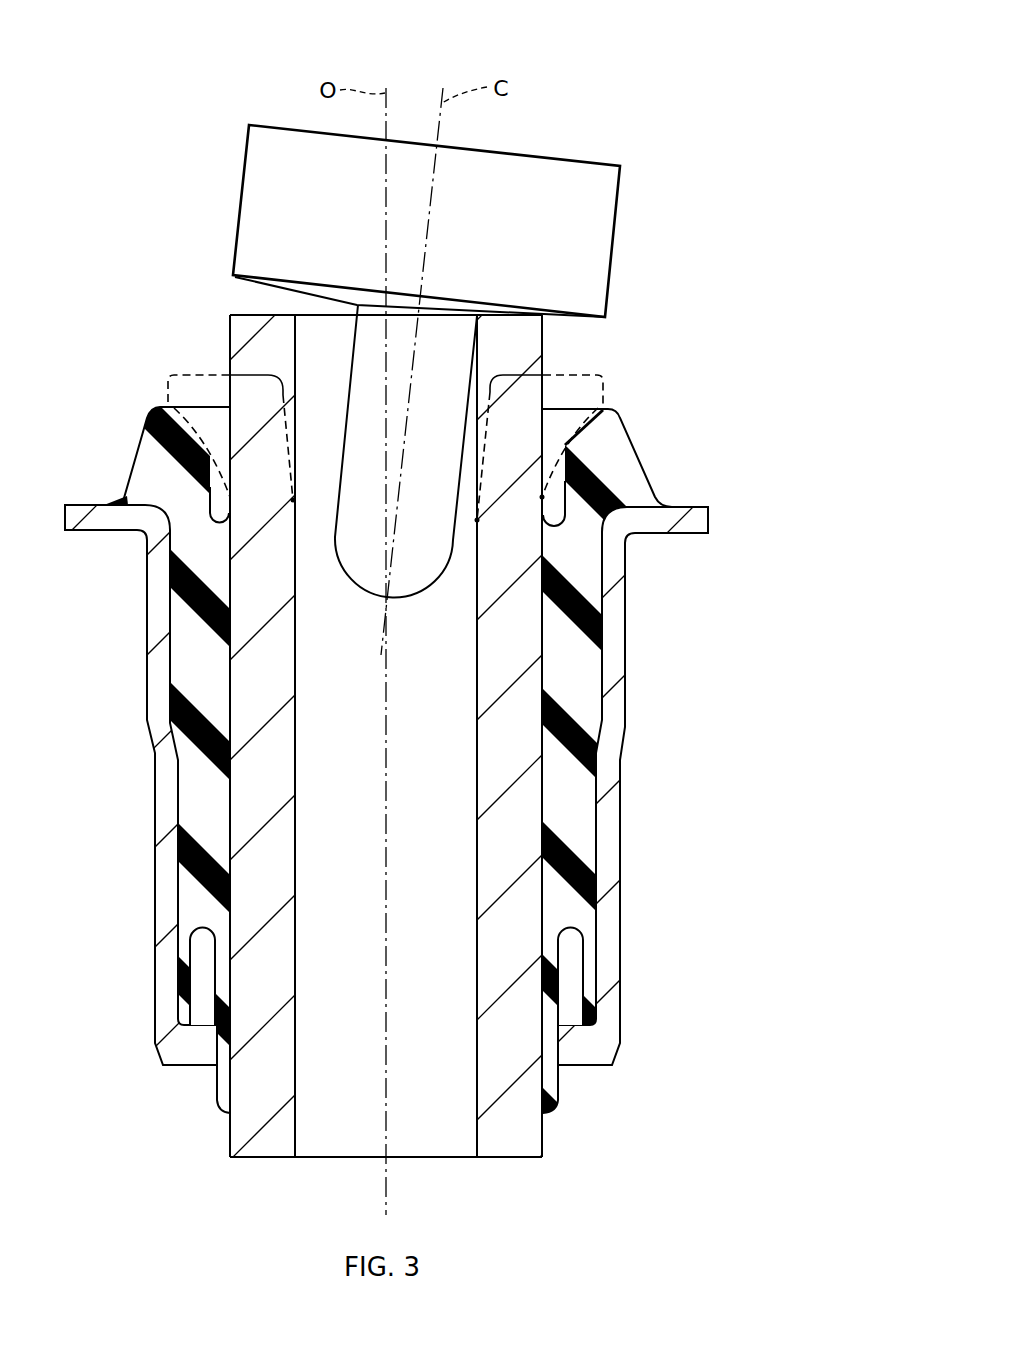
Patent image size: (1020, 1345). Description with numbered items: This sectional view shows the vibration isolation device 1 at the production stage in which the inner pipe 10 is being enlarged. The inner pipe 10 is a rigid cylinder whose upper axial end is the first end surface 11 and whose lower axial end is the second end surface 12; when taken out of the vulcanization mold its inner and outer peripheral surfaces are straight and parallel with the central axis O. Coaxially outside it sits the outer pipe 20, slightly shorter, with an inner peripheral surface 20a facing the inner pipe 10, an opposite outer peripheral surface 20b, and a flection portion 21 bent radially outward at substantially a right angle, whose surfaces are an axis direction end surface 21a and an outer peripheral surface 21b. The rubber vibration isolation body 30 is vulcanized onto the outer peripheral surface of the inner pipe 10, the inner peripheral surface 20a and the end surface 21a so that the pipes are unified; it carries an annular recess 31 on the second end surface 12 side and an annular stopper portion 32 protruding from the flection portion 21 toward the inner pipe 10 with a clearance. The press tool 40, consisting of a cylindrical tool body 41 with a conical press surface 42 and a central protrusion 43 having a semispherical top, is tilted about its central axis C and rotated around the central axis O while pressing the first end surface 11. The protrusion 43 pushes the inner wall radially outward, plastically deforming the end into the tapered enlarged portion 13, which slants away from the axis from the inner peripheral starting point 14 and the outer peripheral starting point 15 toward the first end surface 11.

The vibration isolation device 1 is at (693, 305).
The inner pipe 10 is at (497, 760).
The first end surface 11 is at (247, 313).
The second end surface 12 is at (488, 1158).
The enlarged portion 13 is at (580, 382).
The inner peripheral starting point 14 is at (477, 520).
The outer peripheral starting point 15 is at (556, 524).
The outer pipe 20 is at (607, 822).
The inner peripheral surface 20a is at (600, 680).
The outer peripheral surface 20b is at (627, 680).
The flection portion 21 is at (655, 522).
The axis direction end surface 21a is at (706, 507).
The outer peripheral surface 21b is at (707, 533).
The vibration isolation body 30 is at (587, 723).
The annular recess 31 is at (570, 1013).
The annular stopper portion 32 is at (625, 462).
The press tool 40 is at (689, 96).
The tool body 41 is at (585, 207).
The press surface 42 is at (450, 307).
The protrusion 43 is at (413, 567).